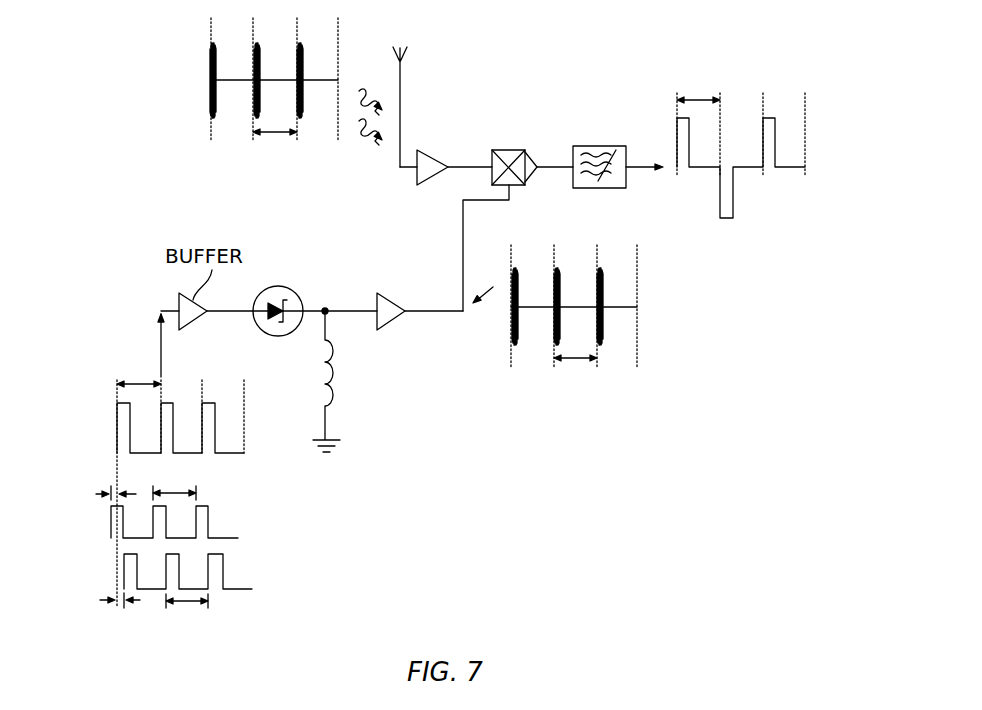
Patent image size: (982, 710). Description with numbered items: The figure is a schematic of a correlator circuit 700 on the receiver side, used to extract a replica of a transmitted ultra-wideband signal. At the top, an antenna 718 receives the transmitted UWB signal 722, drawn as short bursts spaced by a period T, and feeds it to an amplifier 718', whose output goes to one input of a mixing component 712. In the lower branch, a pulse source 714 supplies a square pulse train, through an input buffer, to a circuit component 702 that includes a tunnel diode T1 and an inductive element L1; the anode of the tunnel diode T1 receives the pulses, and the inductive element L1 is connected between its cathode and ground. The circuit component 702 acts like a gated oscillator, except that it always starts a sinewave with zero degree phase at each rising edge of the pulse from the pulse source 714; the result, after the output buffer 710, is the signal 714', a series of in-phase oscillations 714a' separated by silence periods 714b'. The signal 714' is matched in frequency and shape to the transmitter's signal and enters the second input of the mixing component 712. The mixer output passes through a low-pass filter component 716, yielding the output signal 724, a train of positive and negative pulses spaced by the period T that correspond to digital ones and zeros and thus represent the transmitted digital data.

The correlator circuit 700 is at (528, 52).
The circuit component 702 is at (296, 290).
The output buffer 710 is at (391, 293).
The mixing component 712 is at (509, 150).
The pulse source 714 is at (141, 503).
The signal 714' is at (625, 323).
The in-phase oscillations 714a' is at (537, 335).
The silence periods 714b' is at (622, 335).
The low-pass filter component 716 is at (598, 146).
The antenna 718 is at (420, 101).
The amplifier 718' is at (442, 143).
The transmitted UWB signal 722 is at (196, 78).
The output signal 724 is at (822, 142).
The tunnel diode T1 is at (278, 336).
The inductive element L1 is at (323, 380).